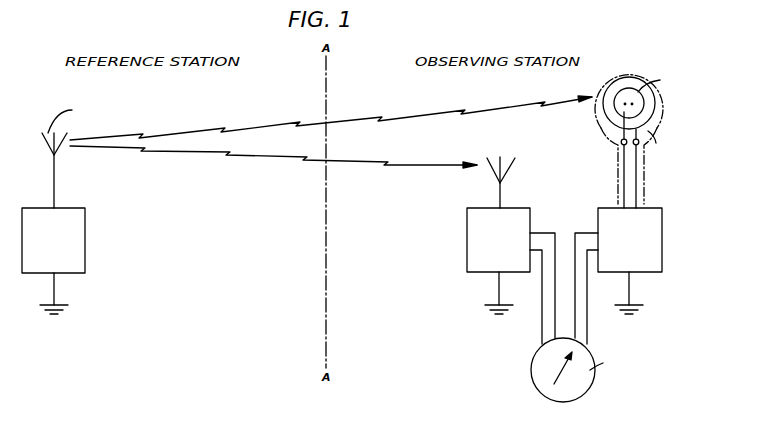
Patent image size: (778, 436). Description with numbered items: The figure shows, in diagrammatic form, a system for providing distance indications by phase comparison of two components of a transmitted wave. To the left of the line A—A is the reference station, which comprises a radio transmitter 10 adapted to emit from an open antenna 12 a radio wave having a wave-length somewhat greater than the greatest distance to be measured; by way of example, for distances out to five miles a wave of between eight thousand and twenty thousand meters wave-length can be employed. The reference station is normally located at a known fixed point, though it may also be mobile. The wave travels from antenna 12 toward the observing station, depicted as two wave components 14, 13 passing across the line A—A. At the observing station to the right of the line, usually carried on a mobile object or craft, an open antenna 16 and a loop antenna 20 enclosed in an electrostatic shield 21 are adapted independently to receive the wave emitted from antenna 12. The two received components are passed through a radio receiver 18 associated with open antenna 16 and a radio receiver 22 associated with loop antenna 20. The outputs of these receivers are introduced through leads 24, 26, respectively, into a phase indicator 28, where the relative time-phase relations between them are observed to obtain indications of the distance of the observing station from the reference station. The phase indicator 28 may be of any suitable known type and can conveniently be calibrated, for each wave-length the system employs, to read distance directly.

The radio transmitter 10 is at (87, 243).
The antenna 12 is at (58, 150).
The radio wave to open antenna 13 is at (262, 155).
The radio wave to loop antenna 14 is at (258, 123).
The open antenna 16 is at (510, 166).
The radio receiver 18 is at (466, 233).
The loop antenna 20 is at (645, 104).
The electrostatic shield 21 is at (661, 122).
The radio receiver 22 is at (658, 240).
The lead 24 is at (555, 315).
The lead 26 is at (575, 317).
The phase indicator 28 is at (532, 372).